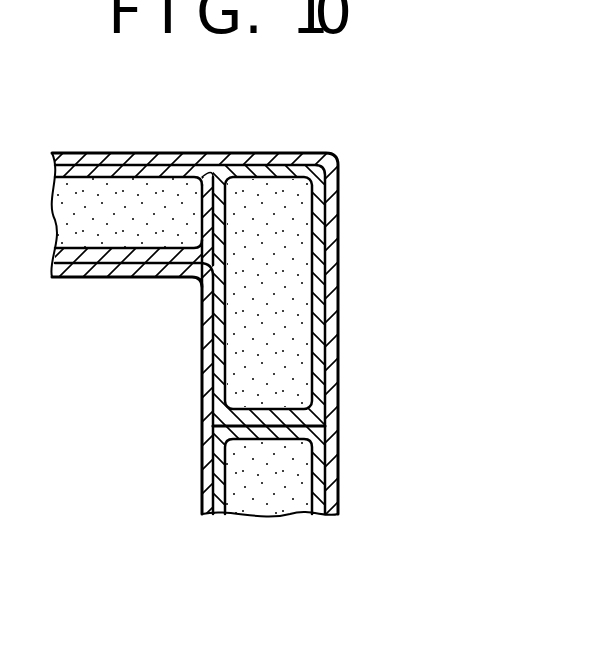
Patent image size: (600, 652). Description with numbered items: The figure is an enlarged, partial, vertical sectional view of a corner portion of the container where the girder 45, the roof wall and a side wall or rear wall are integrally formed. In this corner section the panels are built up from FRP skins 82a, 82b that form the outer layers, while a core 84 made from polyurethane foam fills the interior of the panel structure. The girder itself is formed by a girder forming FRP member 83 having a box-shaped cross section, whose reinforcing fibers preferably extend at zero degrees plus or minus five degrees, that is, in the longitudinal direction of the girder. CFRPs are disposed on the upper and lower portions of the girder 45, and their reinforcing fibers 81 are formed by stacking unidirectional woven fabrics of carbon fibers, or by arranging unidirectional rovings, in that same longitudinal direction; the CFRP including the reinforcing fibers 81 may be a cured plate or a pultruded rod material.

The girder 45 is at (352, 284).
The reinforcing fibers 81 is at (273, 153).
The FRP skin 82a is at (200, 362).
The FRP skin 82b is at (338, 209).
The girder forming FRP member 83 is at (262, 408).
The core 84 is at (292, 333).